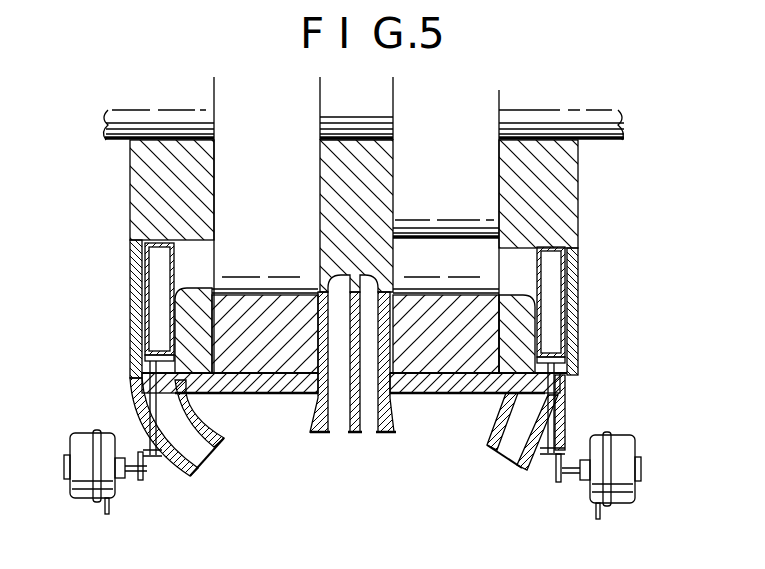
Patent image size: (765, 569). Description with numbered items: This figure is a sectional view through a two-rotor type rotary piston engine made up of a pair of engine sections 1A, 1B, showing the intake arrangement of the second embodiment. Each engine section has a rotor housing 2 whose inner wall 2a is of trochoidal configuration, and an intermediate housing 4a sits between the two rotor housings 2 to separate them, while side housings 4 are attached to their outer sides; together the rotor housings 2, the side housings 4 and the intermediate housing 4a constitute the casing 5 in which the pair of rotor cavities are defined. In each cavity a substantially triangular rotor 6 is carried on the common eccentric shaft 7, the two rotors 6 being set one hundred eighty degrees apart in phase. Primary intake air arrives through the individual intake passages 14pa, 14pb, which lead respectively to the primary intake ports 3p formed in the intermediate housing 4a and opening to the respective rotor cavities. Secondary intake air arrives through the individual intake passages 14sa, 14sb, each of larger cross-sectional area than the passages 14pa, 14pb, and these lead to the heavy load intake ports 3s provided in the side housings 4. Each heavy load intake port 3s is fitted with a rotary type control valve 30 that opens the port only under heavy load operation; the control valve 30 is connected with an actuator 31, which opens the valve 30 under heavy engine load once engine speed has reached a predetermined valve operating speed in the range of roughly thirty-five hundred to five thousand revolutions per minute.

The eccentric shaft 7 is at (106, 118).
The rotor 6 is at (240, 154).
The side housing 4 is at (148, 196).
The intermediate housing 4a is at (380, 168).
The casing 5 is at (130, 226).
The engine section 1A is at (130, 262).
The engine section 1B is at (588, 262).
The rotary type control valve 30 is at (148, 318).
The intake port 3s is at (193, 279).
The intake port 3p is at (311, 286).
The rotor housing 2 is at (240, 356).
The inner wall 2a is at (288, 286).
The individual intake passage 14pa is at (332, 432).
The individual intake passage 14pb is at (374, 432).
The individual intake passage 14sa is at (206, 460).
The individual intake passage 14sb is at (510, 458).
The actuator 31 is at (80, 444).